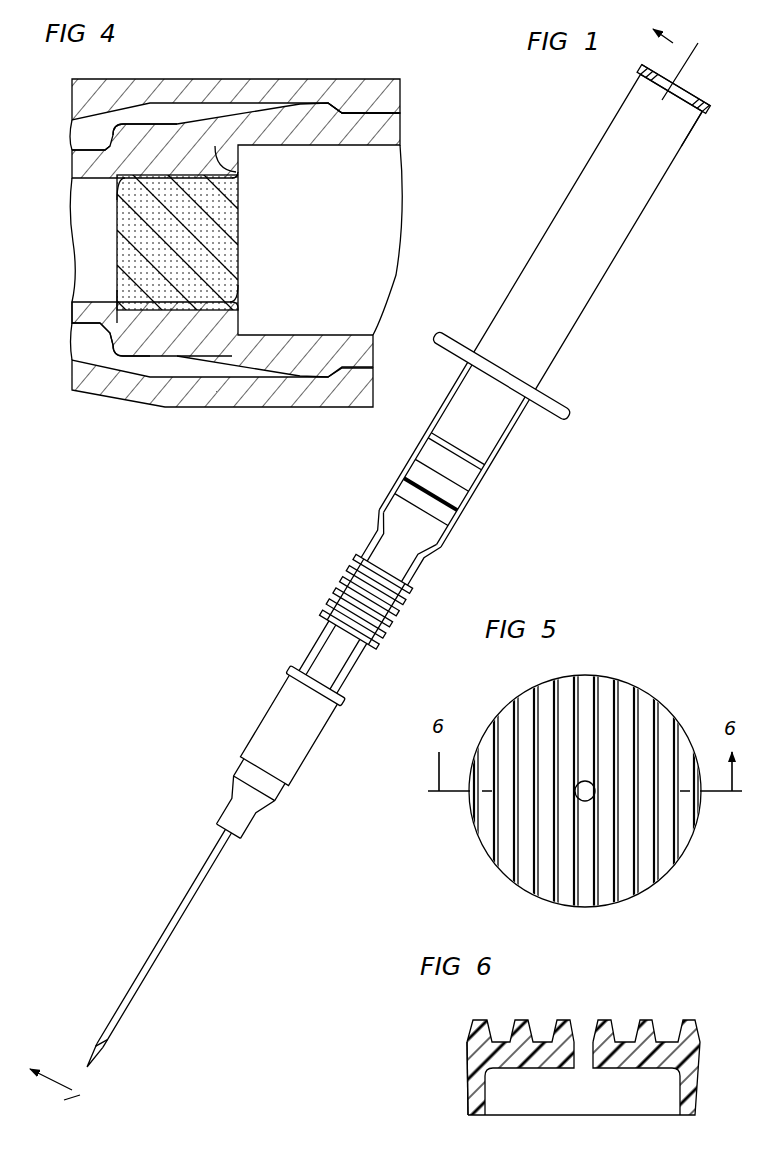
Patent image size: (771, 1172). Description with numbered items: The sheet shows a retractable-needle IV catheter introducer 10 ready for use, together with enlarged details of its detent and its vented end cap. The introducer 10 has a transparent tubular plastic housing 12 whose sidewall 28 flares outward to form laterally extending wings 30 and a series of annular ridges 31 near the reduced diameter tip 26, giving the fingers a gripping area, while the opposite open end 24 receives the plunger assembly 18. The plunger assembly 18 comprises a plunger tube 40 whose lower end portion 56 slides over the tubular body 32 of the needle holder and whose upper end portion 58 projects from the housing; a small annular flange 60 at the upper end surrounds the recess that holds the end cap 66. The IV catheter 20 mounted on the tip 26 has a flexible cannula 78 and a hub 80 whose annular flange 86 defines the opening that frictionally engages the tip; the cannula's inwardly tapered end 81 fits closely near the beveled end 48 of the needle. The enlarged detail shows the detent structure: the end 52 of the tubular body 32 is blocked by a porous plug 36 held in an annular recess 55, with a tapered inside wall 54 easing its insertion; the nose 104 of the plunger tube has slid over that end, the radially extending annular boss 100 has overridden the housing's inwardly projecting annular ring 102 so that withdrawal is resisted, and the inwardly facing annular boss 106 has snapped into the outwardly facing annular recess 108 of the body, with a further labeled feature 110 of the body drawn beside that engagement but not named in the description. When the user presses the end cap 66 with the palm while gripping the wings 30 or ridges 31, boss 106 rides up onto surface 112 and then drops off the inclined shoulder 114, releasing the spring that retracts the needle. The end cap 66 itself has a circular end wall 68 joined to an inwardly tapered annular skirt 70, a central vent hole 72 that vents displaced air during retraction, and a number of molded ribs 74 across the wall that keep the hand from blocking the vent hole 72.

In FIG. 1, the IV catheter introducer 10 is at (389, 567).
In FIG. 1, the tubular plastic housing 12 is at (453, 533).
In FIG. 1, the plunger assembly 18 is at (563, 295).
In FIG. 1, the IV catheter 20 is at (210, 850).
In FIG. 1, the open end 24 is at (528, 424).
In FIG. 1, the reduced diameter tip 26 is at (304, 682).
In FIG. 4, the sidewall 28 is at (200, 84).
In FIG. 1, the sidewall 28 is at (370, 537).
In FIG. 1, the laterally extending wings 30 is at (552, 397).
In FIG. 1, the annular ridges 31 is at (358, 566).
In FIG. 4, the tubular body 32 is at (70, 318).
In FIG. 4, the porous plug 36 is at (120, 223).
In FIG. 4, the plunger tube 40 is at (405, 128).
In FIG. 1, the plunger tube 40 is at (597, 275).
In FIG. 1, the beveled end 48 is at (90, 1058).
In FIG. 4, the end 52 is at (228, 160).
In FIG. 4, the tapered inside wall 54 is at (238, 300).
In FIG. 4, the annular recess 55 is at (120, 197).
In FIG. 4, the lower end portion 56 is at (150, 120).
In FIG. 1, the upper end portion 58 is at (693, 128).
In FIG. 1, the annular flange 60 is at (636, 68).
In FIG. 1, the end cap 66 is at (706, 91).
In FIG. 5, the end cap 66 is at (588, 789).
In FIG. 6, the end cap 66 is at (575, 1039).
In FIG. 5, the circular end wall 68 is at (665, 722).
In FIG. 6, the circular end wall 68 is at (624, 1040).
In FIG. 6, the annular skirt 70 is at (470, 1103).
In FIG. 5, the vent hole 72 is at (586, 780).
In FIG. 6, the vent hole 72 is at (577, 1063).
In FIG. 5, the molded ribs 74 is at (563, 892).
In FIG. 6, the molded ribs 74 is at (593, 1042).
In FIG. 1, the cannula 78 is at (147, 955).
In FIG. 1, the hub 80 is at (287, 773).
In FIG. 1, the inwardly tapered end 81 is at (92, 1045).
In FIG. 1, the annular flange 86 is at (340, 704).
In FIG. 4, the annular boss 100 is at (325, 103).
In FIG. 4, the annular ring 102 is at (362, 112).
In FIG. 4, the nose 104 is at (112, 340).
In FIG. 4, the annular boss 106 is at (235, 178).
In FIG. 4, the annular recess 108 is at (205, 340).
In FIG. 4, the lower lip 110 is at (118, 328).
In FIG. 4, the surface 112 is at (130, 338).
In FIG. 4, the inclined shoulder 114 is at (108, 148).